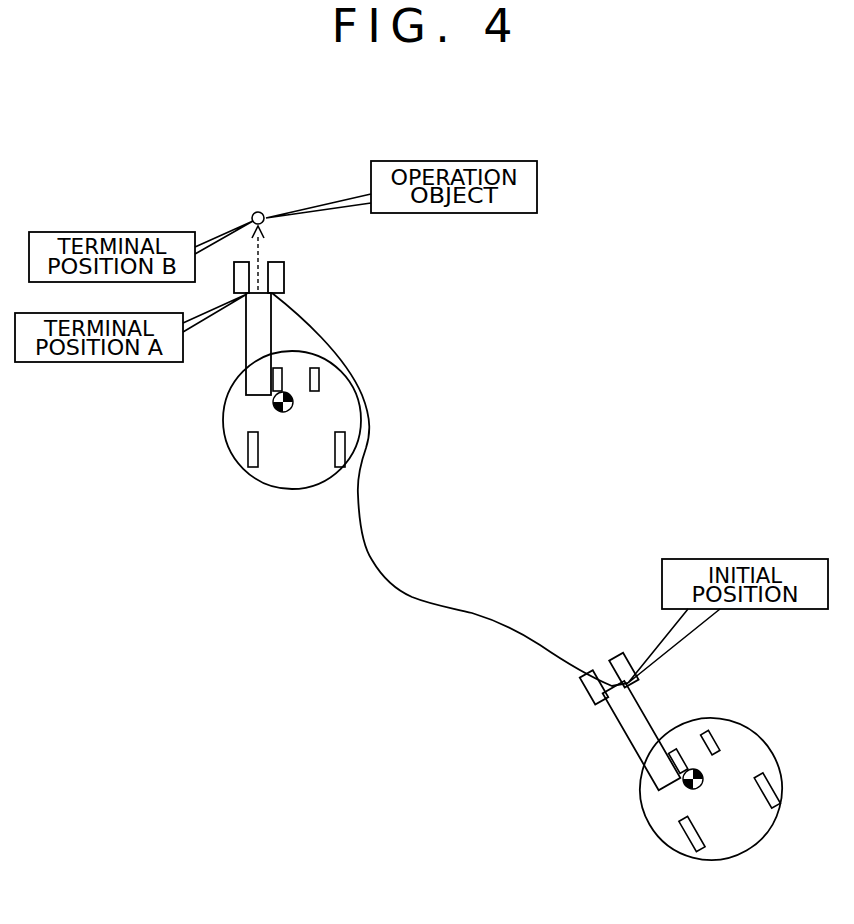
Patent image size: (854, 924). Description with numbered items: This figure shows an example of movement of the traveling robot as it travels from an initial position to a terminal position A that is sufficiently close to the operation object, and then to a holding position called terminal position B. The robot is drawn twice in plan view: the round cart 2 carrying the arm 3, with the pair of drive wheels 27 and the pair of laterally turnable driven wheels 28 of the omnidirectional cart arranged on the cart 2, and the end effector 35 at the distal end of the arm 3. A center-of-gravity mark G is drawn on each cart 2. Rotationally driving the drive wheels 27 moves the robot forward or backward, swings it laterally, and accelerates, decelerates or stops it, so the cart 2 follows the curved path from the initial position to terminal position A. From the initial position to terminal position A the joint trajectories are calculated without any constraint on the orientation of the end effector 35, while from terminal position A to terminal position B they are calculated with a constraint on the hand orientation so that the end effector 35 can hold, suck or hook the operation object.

The body 2 is at (240, 455).
The arm 3 is at (256, 323).
The drive wheels 27 is at (255, 466).
The driven wheels 28 is at (274, 372).
The end effector 35 is at (284, 278).
The center of gravity G is at (276, 405).